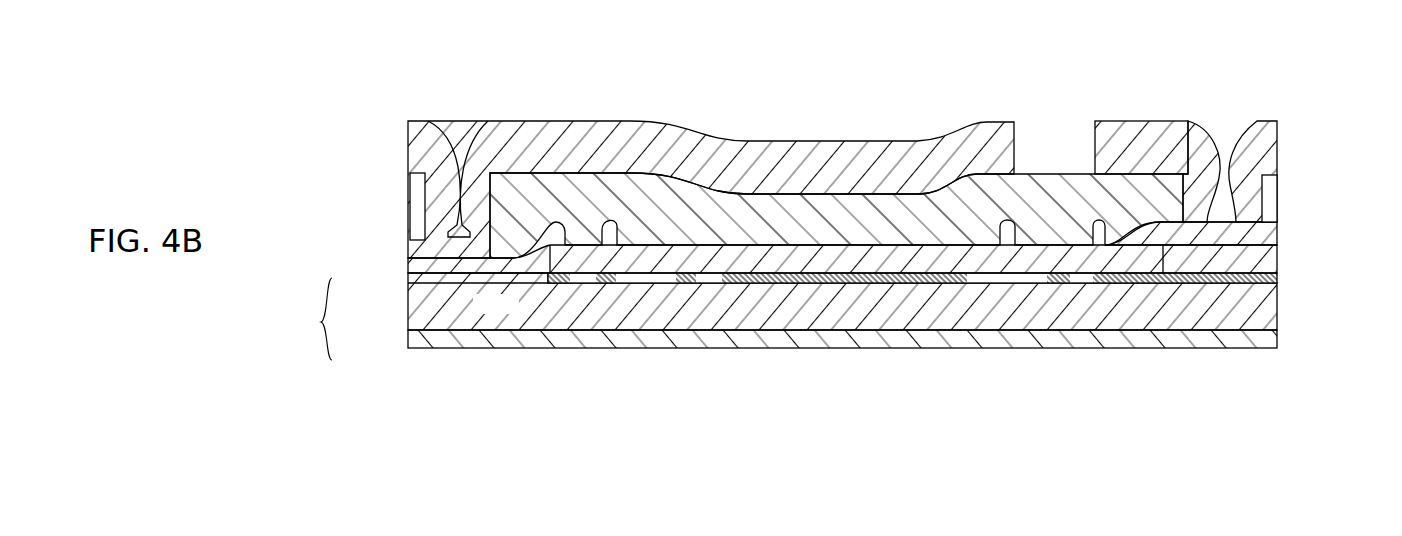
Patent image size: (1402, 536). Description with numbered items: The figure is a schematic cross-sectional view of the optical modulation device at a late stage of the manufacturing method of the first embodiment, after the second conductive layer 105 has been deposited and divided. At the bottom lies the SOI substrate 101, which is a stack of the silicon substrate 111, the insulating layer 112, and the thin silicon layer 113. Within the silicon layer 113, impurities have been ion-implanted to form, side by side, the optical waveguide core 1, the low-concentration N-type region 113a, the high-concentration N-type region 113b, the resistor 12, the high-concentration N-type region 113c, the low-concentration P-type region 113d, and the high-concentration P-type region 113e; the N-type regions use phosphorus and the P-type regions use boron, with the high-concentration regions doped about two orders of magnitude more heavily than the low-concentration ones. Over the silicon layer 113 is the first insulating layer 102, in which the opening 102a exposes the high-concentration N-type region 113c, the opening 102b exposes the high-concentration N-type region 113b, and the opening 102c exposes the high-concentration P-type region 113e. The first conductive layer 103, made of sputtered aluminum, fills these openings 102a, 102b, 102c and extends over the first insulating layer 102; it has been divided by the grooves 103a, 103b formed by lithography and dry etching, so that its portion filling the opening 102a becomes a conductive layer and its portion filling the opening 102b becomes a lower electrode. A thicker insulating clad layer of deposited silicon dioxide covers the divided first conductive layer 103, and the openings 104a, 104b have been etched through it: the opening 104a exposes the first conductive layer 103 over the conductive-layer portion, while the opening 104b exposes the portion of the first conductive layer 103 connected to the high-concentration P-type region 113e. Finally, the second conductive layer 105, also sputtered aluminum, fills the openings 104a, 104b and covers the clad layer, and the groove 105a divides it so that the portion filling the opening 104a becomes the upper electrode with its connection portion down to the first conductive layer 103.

The optical waveguide core 1 is at (1048, 286).
The resistor 12 is at (663, 286).
The SOI substrate 101 is at (302, 319).
The first insulating layer 102 is at (408, 268).
The opening 102a is at (597, 286).
The opening 102b is at (972, 286).
The opening 102c is at (1150, 286).
The first conductive layer 103 is at (408, 243).
The groove 103a is at (662, 236).
The groove 103b is at (1063, 232).
The opening 104a is at (490, 205).
The opening 104b is at (1242, 200).
The second conductive layer 105 is at (753, 150).
The groove 105a is at (1095, 148).
The silicon substrate 111 is at (408, 340).
The insulating layer 112 is at (408, 313).
The silicon layer 113 is at (538, 272).
The low-concentration N-type region 113a is at (1022, 286).
The high-concentration N-type region 113b is at (858, 286).
The high-concentration N-type region 113c is at (556, 286).
The low-concentration P-type region 113d is at (1085, 286).
The high-concentration P-type region 113e is at (1195, 286).